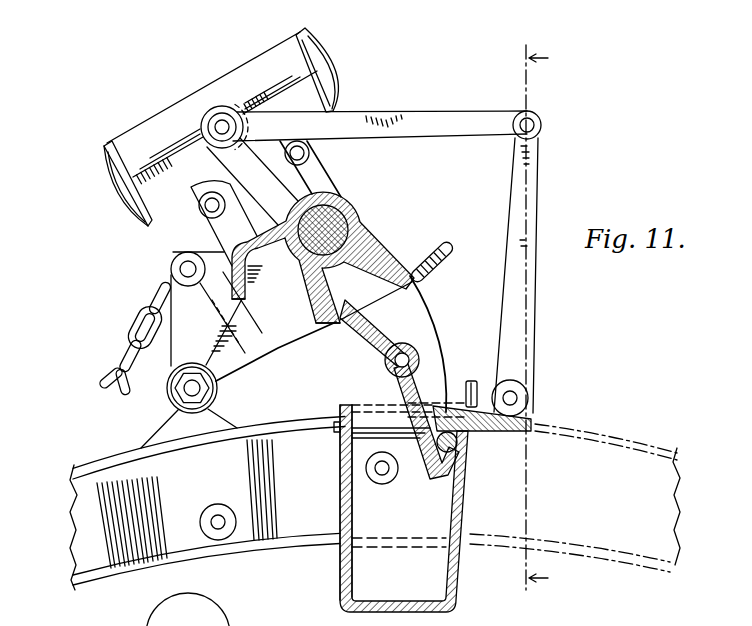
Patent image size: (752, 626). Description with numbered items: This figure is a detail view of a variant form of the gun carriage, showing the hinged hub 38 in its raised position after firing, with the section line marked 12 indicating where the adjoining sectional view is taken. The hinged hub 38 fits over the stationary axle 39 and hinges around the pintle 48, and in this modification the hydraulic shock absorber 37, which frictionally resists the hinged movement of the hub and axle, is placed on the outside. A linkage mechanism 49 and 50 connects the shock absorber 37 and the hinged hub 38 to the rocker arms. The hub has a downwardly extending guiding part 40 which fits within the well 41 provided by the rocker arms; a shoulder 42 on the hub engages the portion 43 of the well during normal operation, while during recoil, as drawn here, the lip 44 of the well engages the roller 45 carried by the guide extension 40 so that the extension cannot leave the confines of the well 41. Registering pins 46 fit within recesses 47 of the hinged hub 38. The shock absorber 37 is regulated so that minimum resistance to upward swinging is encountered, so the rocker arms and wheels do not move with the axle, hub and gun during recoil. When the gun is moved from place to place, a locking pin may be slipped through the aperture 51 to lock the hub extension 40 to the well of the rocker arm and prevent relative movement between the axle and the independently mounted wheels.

The section line 12- 12 is at (523, 318).
The hydraulic shock absorber 37 is at (270, 68).
The hinged hub 38 is at (363, 223).
The stationary axle 39 is at (333, 223).
The guiding part 40 is at (372, 350).
The well 41 is at (340, 511).
The shoulder 42 is at (337, 325).
The portion of the well 43 is at (349, 394).
The lip 44 is at (447, 404).
The roller 45 is at (460, 447).
The registering pins 46 is at (478, 388).
The recesses 47 is at (435, 246).
The pintle 48 is at (186, 390).
The linkage mechanism 49 is at (533, 198).
The linkage mechanism 50 is at (424, 120).
The aperture 51 is at (404, 360).